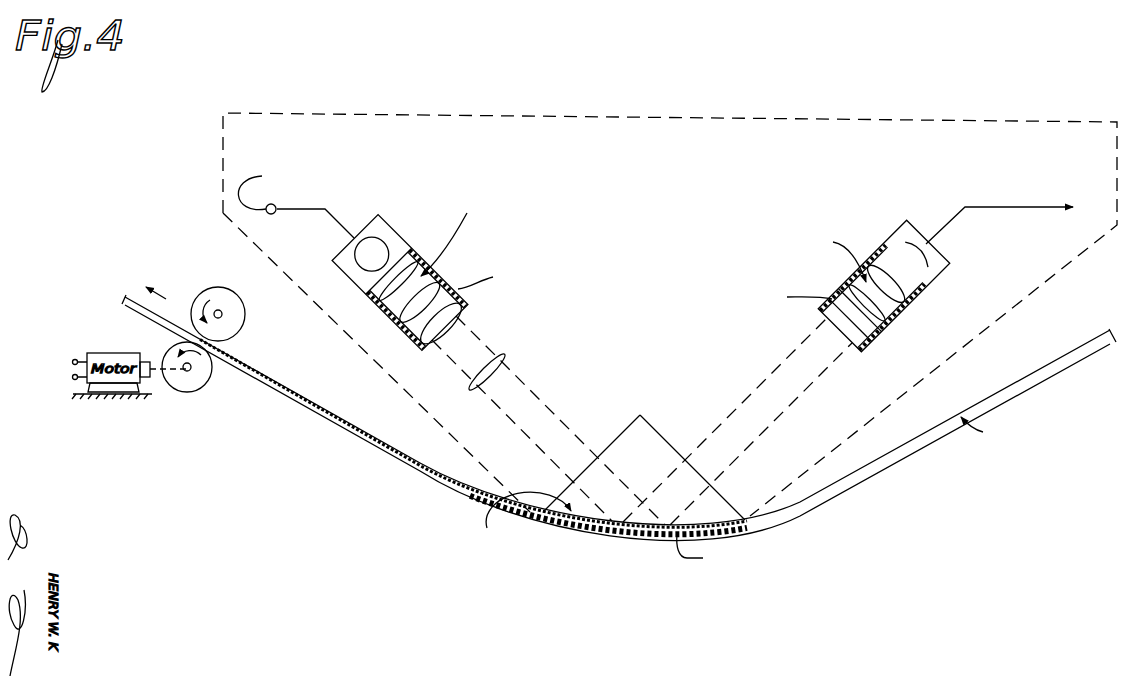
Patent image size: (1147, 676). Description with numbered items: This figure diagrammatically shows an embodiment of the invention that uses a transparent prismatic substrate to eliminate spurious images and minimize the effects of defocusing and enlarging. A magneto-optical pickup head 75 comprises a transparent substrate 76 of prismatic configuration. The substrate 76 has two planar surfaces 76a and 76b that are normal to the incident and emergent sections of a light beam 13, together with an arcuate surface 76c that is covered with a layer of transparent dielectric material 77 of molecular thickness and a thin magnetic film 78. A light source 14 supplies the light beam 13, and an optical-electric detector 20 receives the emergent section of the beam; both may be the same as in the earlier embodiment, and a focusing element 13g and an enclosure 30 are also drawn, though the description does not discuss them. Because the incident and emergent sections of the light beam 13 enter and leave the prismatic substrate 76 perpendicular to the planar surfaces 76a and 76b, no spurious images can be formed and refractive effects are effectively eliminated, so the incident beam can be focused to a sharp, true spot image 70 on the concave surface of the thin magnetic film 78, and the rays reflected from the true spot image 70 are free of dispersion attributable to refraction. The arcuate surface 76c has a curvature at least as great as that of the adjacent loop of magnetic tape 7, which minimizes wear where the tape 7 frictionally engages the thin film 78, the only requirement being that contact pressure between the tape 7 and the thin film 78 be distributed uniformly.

The magnetic tape 7 is at (619, 441).
The light beam 13 is at (817, 385).
The focusing lens 13g is at (505, 358).
The light source 14 is at (400, 227).
The optical-electric detector 20 is at (882, 242).
The optical enclosure 30 is at (1043, 283).
The true spot image 70 is at (637, 539).
The magneto-optical pickup head 75 is at (812, 541).
The transparent substrate 76 is at (657, 450).
The planar surface 76a is at (607, 450).
The planar surface 76b is at (692, 464).
The arcuate surface 76c is at (702, 521).
The transparent dielectric layer 77 is at (563, 522).
The thin magnetic film 78 is at (593, 525).